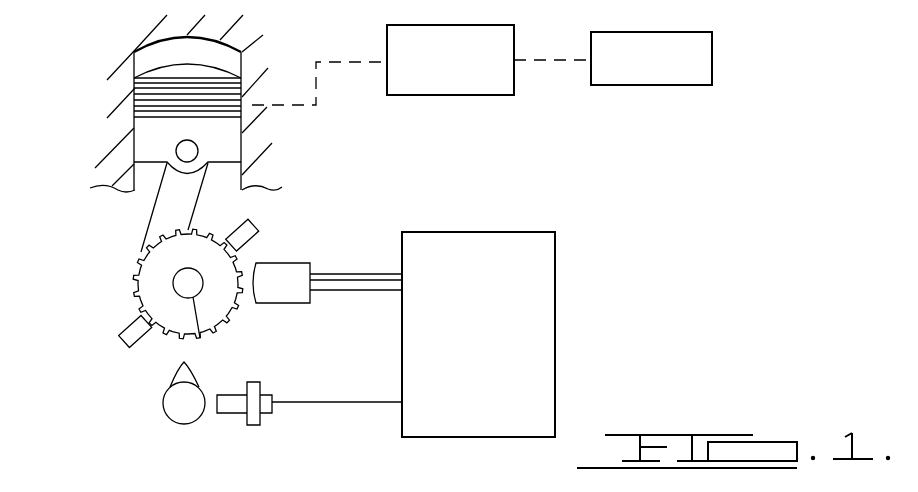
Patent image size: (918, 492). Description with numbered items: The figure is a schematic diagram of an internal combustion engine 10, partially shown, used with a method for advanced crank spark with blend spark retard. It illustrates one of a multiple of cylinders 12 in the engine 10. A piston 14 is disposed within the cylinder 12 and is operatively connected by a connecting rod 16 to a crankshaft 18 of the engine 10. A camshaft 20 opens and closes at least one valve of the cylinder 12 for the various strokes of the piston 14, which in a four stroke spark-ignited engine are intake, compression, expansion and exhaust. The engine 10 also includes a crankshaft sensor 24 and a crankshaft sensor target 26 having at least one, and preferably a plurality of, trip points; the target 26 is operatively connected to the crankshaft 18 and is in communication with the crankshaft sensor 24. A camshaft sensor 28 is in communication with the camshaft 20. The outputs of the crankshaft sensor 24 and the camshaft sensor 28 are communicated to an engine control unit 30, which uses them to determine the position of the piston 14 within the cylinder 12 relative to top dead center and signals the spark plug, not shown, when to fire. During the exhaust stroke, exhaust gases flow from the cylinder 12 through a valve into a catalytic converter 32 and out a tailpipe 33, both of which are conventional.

The internal combustion engine 10 is at (108, 65).
The cylinder 12 is at (133, 75).
The piston 14 is at (228, 142).
The connecting rod 16 is at (158, 221).
The crankshaft 18 is at (203, 289).
The camshaft 20 is at (163, 417).
The crankshaft sensor 24 is at (292, 270).
The crankshaft sensor target 26 is at (143, 287).
The camshaft sensor 28 is at (273, 415).
The engine control unit 30 is at (555, 300).
The catalytic converter 32 is at (500, 87).
The tailpipe 33 is at (687, 78).